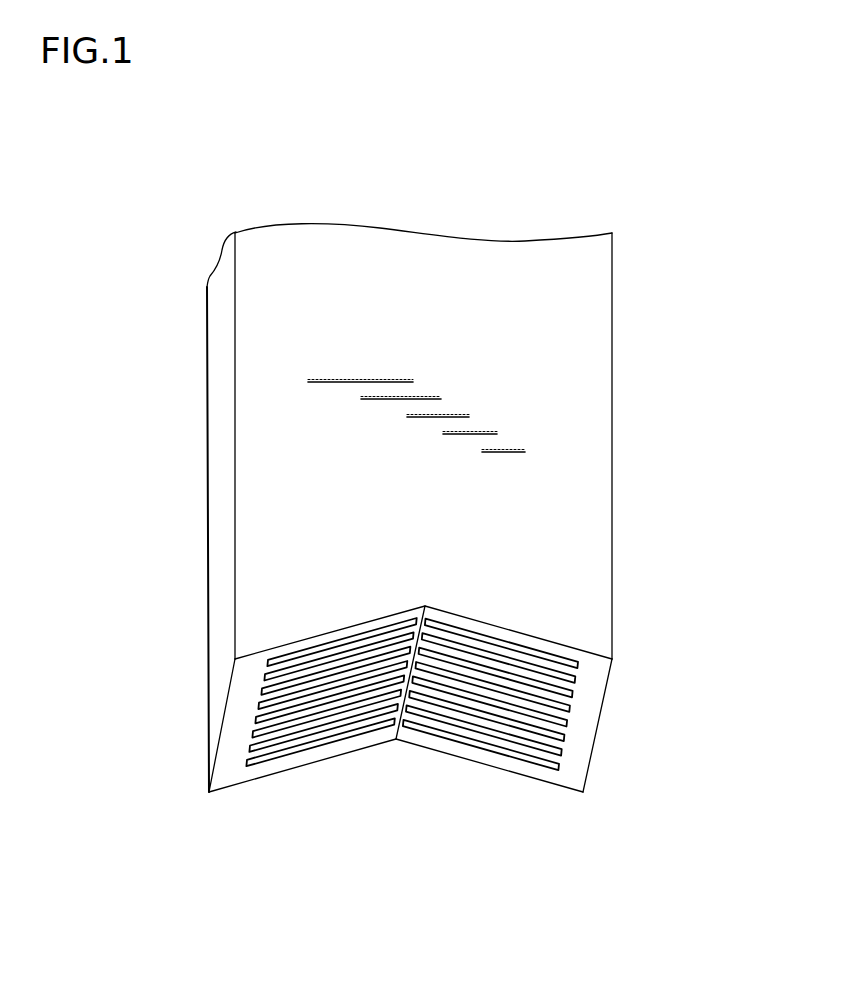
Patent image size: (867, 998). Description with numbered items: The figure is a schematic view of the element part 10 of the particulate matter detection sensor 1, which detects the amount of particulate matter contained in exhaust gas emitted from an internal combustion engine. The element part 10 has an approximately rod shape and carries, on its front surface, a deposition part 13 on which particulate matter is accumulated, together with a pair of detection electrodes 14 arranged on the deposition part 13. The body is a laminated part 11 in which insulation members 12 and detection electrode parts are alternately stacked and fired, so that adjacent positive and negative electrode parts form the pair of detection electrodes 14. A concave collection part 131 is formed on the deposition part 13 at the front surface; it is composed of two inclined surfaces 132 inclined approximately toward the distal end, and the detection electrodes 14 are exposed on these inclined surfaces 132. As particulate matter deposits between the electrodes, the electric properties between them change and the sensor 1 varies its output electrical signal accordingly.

The particulate matter detection sensor 1 is at (627, 215).
The element part 10 is at (389, 558).
The laminated part 11 is at (165, 830).
The insulation member 12 is at (223, 775).
The deposition part 13 is at (240, 790).
The concave collection part 131 is at (297, 772).
The inclined surface 132 is at (247, 687).
The detection electrode 14 is at (250, 763).